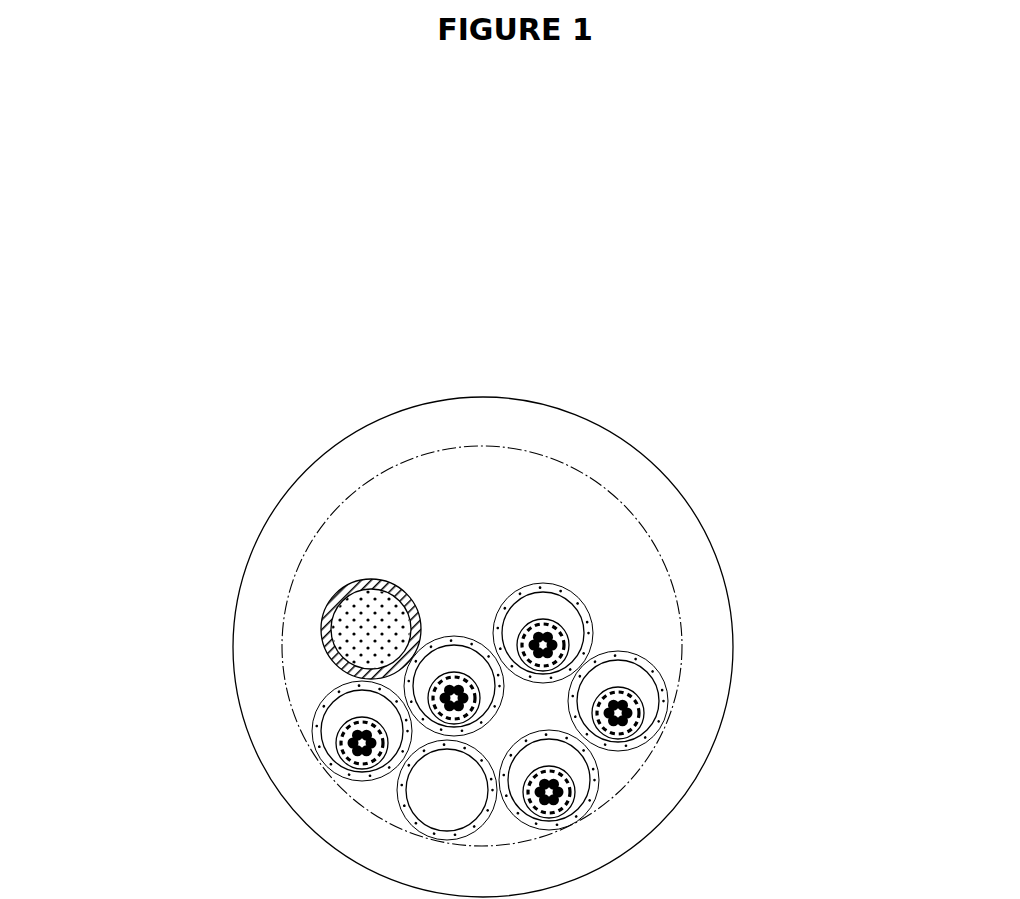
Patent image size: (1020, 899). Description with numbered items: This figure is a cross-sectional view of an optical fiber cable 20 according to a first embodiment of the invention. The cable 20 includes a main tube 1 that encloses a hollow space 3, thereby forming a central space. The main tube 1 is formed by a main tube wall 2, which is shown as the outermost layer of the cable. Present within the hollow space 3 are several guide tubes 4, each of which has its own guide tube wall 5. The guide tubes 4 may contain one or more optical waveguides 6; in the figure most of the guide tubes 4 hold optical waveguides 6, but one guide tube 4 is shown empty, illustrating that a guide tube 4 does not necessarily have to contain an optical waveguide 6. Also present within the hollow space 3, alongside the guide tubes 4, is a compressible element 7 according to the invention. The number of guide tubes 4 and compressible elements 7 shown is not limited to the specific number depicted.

The main tube 1 is at (273, 474).
The main tube wall 2 is at (265, 540).
The hollow space 3 is at (409, 487).
The guide tube 4 is at (502, 748).
The guide tube wall 5 is at (677, 667).
The optical waveguide 6 is at (579, 617).
The compressible element 7 is at (302, 628).
The optical fiber cable 20 is at (784, 399).